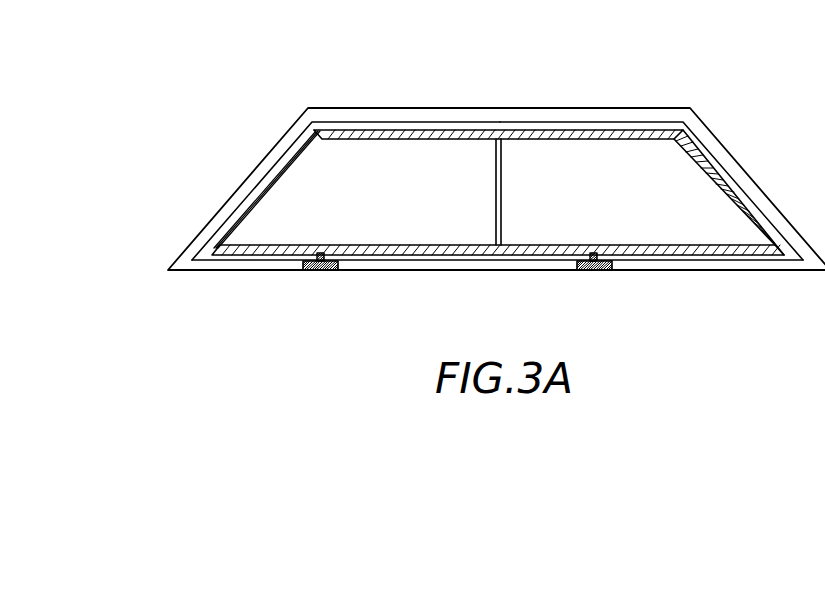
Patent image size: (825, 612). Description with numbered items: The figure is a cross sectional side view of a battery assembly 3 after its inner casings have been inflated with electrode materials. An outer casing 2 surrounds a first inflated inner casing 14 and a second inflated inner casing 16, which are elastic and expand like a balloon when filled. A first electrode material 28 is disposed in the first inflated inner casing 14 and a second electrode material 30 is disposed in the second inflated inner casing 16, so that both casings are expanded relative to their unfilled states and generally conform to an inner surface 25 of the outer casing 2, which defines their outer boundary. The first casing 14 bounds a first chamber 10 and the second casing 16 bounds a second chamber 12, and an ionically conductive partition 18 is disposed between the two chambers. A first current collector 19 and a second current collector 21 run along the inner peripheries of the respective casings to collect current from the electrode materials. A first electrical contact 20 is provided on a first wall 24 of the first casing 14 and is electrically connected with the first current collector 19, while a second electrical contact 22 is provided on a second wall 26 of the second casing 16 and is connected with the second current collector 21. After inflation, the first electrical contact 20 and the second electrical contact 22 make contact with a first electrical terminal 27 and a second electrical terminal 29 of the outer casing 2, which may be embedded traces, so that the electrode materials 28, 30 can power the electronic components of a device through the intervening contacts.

The outer casing 2 is at (673, 115).
The battery assembly 3 is at (208, 140).
The first chamber 10 is at (278, 218).
The second chamber 12 is at (663, 160).
The first inflated inner casing 14 is at (303, 121).
The second inflated inner casing 16 is at (592, 132).
The ionically conductive partition 18 is at (499, 207).
The first current collector 19 is at (404, 134).
The first electrical contact 20 is at (323, 272).
The second current collector 21 is at (543, 137).
The second electrical contact 22 is at (590, 272).
The first wall 24 is at (390, 259).
The inner surface 25 is at (417, 138).
The second wall 26 is at (705, 259).
The first electrical terminal 27 is at (338, 272).
The first electrode material 28 is at (464, 204).
The second electrical terminal 29 is at (617, 268).
The second electrode material 30 is at (684, 206).